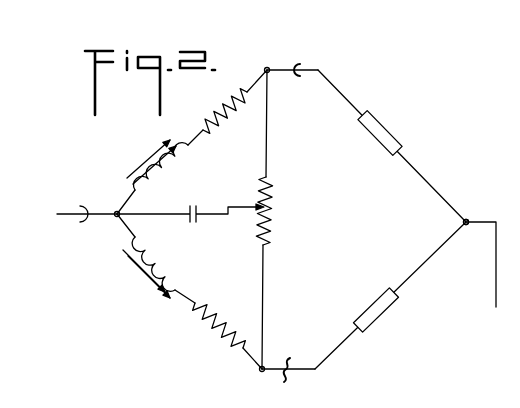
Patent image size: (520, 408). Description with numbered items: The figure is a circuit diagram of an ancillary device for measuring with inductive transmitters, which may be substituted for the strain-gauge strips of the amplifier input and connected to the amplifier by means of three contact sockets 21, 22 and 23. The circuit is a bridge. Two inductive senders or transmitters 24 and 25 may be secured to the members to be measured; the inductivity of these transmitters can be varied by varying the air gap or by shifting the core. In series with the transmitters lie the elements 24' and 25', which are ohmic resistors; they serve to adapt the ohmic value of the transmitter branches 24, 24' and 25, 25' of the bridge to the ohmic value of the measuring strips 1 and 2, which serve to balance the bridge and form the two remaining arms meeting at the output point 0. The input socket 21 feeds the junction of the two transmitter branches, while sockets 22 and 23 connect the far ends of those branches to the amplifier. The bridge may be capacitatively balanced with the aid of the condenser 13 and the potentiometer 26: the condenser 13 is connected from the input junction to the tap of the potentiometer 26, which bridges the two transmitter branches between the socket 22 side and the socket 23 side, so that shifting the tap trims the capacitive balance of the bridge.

The output terminal node 0 is at (467, 220).
The strip 1 is at (389, 125).
The strip 2 is at (382, 312).
The condenser 13 is at (202, 207).
The contact socket 21 is at (87, 233).
The contact socket 22 is at (297, 66).
The contact socket 23 is at (288, 382).
The inductive transmitter 24 is at (157, 171).
The ohmic resistor 24' is at (206, 110).
The inductive transmitter 25 is at (160, 267).
The ohmic resistor 25' is at (211, 328).
The potentiometer 26 is at (272, 196).